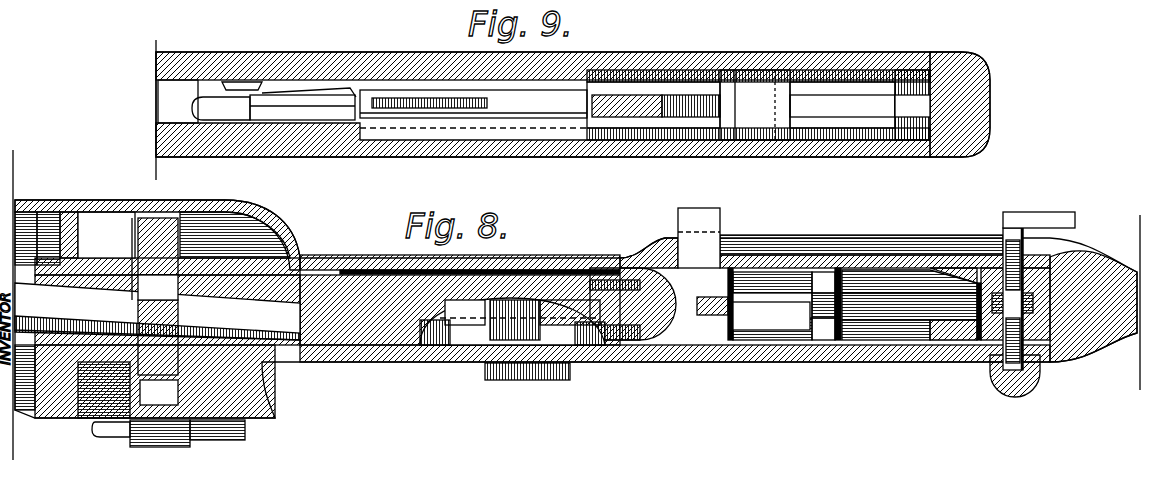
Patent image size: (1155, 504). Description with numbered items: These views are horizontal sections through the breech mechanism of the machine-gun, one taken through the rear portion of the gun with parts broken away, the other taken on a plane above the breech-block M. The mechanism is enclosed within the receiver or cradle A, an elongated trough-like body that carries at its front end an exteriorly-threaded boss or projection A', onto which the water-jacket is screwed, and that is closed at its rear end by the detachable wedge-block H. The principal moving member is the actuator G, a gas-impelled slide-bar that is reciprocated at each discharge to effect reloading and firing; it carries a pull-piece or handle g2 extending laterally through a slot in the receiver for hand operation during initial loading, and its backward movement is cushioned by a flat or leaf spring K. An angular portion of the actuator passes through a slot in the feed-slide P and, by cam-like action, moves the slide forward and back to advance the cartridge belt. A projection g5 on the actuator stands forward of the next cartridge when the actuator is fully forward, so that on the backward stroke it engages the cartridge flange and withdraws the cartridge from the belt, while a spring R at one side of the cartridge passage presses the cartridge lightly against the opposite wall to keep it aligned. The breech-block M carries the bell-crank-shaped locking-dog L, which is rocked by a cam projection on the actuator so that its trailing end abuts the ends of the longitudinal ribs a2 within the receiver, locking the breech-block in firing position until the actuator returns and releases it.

In FIG. 9, the receiver or cradle A is at (573, 120).
In FIG. 8, the receiver or cradle A is at (576, 323).
In FIG. 8, the threaded boss or projection A' is at (157, 220).
In FIG. 9, the wedge-block H is at (978, 68).
In FIG. 8, the wedge-block H is at (1138, 250).
In FIG. 9, the spring R is at (262, 92).
In FIG. 9, the breech-block M is at (475, 109).
In FIG. 9, the locking-dog L is at (827, 83).
In FIG. 8, the locking-dog L is at (807, 323).
In FIG. 8, the feed-slide P is at (160, 235).
In FIG. 8, the projection g5 is at (243, 256).
In FIG. 8, the actuator G is at (355, 280).
In FIG. 8, the pull-piece or handle g2 is at (697, 227).
In FIG. 8, the longitudinal ribs a2 is at (850, 278).
In FIG. 8, the leaf spring K is at (975, 278).